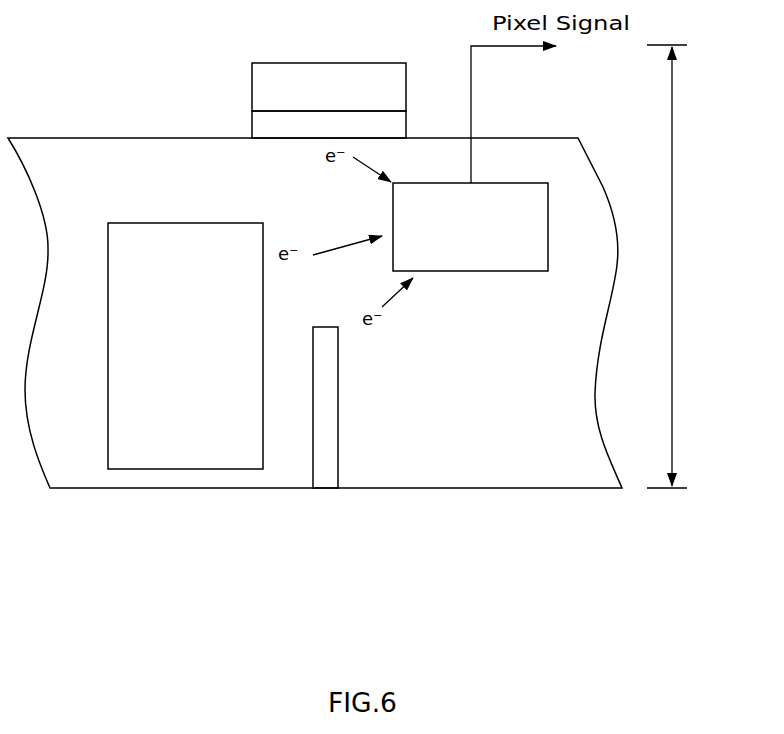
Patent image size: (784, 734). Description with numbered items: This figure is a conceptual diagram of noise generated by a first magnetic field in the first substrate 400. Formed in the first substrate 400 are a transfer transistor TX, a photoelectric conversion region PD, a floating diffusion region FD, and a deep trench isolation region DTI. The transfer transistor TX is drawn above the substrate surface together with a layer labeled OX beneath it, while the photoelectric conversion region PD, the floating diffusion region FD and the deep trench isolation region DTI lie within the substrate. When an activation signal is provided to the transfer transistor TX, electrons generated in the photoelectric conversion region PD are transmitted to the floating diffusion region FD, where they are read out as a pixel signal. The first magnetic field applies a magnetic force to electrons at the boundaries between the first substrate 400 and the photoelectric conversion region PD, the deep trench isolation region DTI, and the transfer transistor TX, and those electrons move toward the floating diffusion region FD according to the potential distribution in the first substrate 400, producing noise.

The first substrate 400 is at (672, 266).
The transfer transistor TX is at (329, 87).
The gate oxide OX is at (329, 124).
The floating diffusion region FD is at (470, 227).
The photoelectric conversion region PD is at (185, 346).
The deep trench isolation region DTI is at (338, 405).